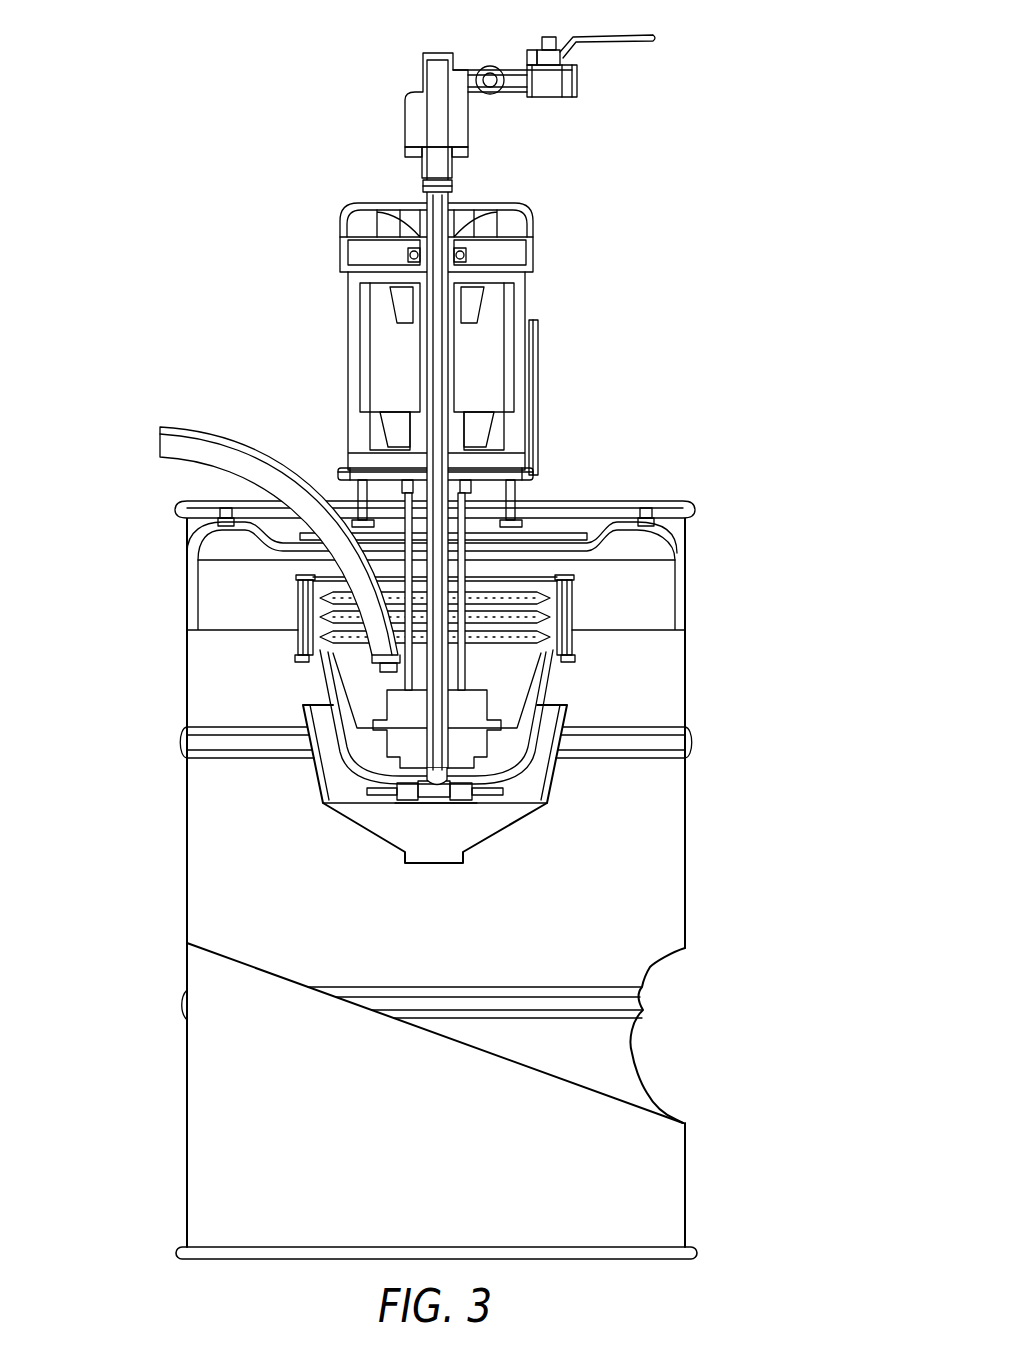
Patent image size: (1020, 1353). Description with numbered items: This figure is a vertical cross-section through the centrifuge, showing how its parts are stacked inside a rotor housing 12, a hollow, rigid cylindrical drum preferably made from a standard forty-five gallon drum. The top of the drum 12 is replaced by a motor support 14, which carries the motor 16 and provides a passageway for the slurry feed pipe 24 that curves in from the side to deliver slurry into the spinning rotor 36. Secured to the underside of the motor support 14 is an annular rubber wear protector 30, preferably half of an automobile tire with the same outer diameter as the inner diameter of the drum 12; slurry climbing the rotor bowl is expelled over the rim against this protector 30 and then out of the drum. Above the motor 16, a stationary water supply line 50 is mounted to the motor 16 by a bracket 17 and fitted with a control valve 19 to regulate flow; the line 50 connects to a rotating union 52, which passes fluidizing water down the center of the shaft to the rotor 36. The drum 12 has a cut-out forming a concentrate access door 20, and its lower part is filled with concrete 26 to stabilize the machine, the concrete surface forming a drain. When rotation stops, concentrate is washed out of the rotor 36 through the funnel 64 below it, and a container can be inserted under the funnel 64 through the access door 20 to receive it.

The rotor housing 12 is at (185, 681).
The motor support 14 is at (598, 502).
The motor 16 is at (346, 328).
The bracket 17 is at (548, 352).
The control valve 19 is at (655, 37).
The concentrate access door 20 is at (686, 980).
The slurry feed pipe 24 is at (203, 427).
The concrete 26 is at (202, 1047).
The annular rubber wear protector 30 is at (640, 588).
The rotor 36 is at (513, 678).
The stationary water supply line 50 is at (581, 107).
The rotating union 52 is at (404, 99).
The funnel 64 is at (485, 818).